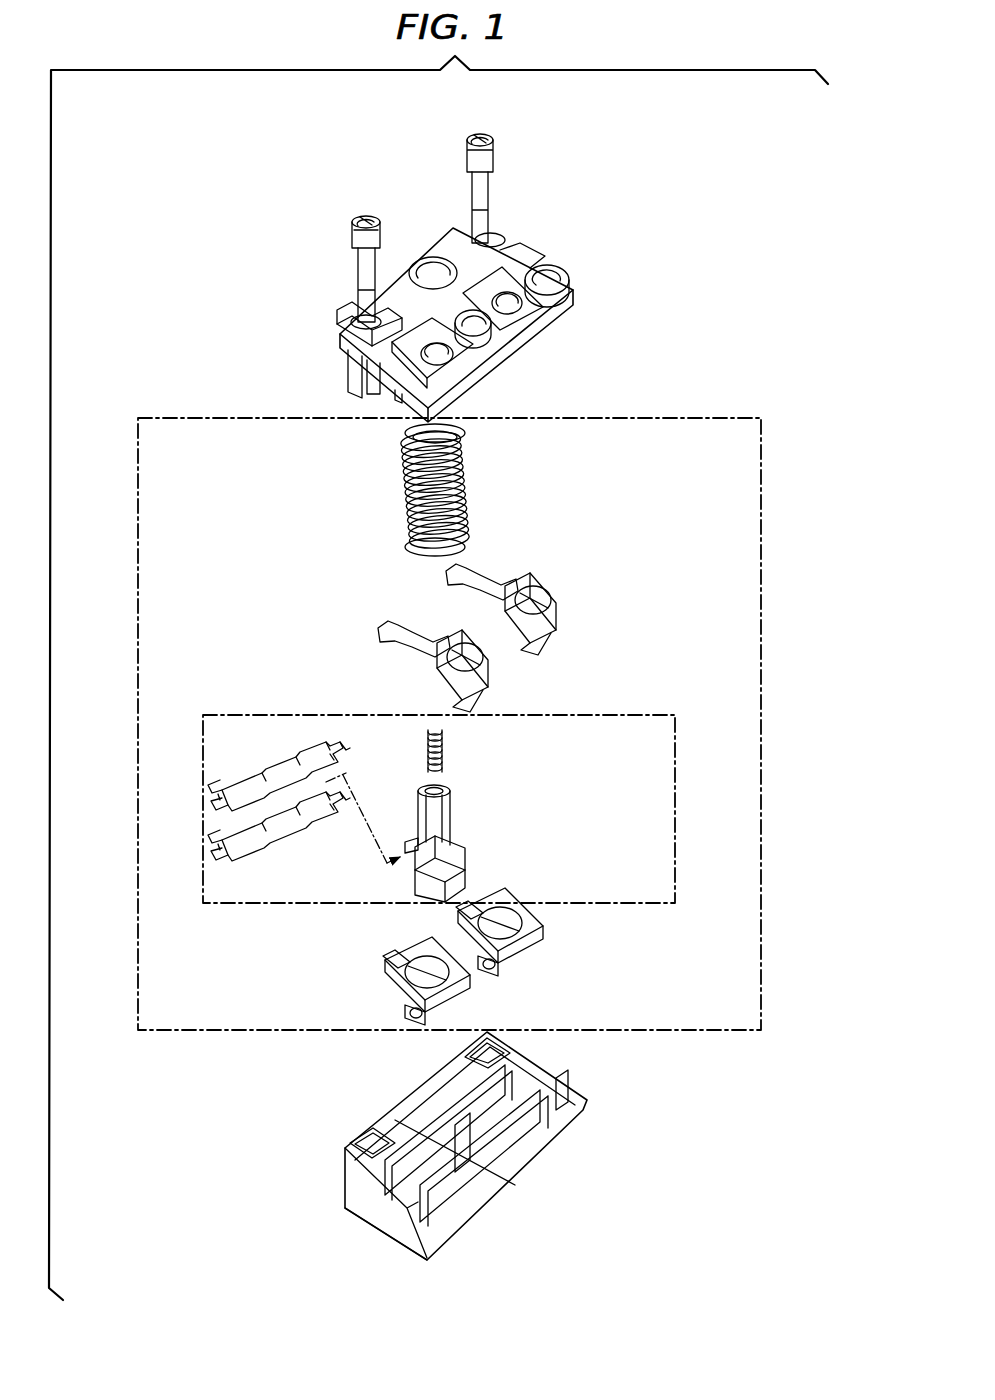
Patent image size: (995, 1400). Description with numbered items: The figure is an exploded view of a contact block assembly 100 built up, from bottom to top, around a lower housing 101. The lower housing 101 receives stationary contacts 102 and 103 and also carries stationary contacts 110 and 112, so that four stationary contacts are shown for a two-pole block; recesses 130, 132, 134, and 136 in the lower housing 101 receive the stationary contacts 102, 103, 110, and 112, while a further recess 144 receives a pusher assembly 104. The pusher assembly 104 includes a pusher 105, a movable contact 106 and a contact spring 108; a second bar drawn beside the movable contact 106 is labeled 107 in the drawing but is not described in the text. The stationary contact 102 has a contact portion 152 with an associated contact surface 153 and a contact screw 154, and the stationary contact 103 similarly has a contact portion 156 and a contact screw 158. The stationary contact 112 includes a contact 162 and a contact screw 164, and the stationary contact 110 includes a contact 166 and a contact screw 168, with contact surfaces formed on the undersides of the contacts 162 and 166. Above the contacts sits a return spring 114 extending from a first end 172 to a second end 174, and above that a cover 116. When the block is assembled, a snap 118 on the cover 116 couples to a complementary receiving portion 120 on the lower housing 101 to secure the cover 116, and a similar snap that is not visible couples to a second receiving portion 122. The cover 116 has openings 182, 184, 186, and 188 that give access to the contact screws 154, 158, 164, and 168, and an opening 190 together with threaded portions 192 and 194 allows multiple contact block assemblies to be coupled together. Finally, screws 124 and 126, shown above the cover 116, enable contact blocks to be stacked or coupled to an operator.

The contact block assembly 100 is at (770, 282).
The lower housing 101 is at (464, 1152).
The stationary contact 102 is at (473, 965).
The stationary contact 103 is at (400, 965).
The pusher assembly 104 is at (650, 714).
The pusher 105 is at (480, 880).
The movable contact 106 is at (280, 770).
The second bus bar 107 is at (290, 848).
The contact spring 108 is at (405, 752).
The stationary contact 110 is at (416, 648).
The stationary contact 112 is at (548, 602).
The return spring 114 is at (499, 490).
The cover 116 is at (588, 302).
The snap 118 is at (348, 375).
The receiving portion 120 is at (355, 1148).
The second receiving portion 122 is at (505, 1045).
The screw 124 is at (337, 254).
The screw 126 is at (483, 176).
The recess 130 is at (410, 1245).
The recess 132 is at (490, 1180).
The recess 134 is at (530, 1160).
The recess 136 is at (565, 1130).
The recess 144 is at (410, 1100).
The contact portion 152 is at (487, 985).
The contact surface 153 is at (515, 983).
The contact screw 154 is at (432, 949).
The contact portion 156 is at (410, 1015).
The contact screw 158 is at (428, 960).
The contact 162 is at (490, 572).
The contact screw 164 is at (559, 612).
The contact 166 is at (395, 625).
The contact screw 168 is at (485, 680).
The first end 172 is at (470, 550).
The second end 174 is at (470, 442).
The opening 182 is at (445, 375).
The opening 184 is at (488, 335).
The opening 186 is at (512, 320).
The opening 188 is at (555, 276).
The opening 190 is at (425, 266).
The threaded portion 192 is at (360, 215).
The threaded portion 194 is at (478, 138).